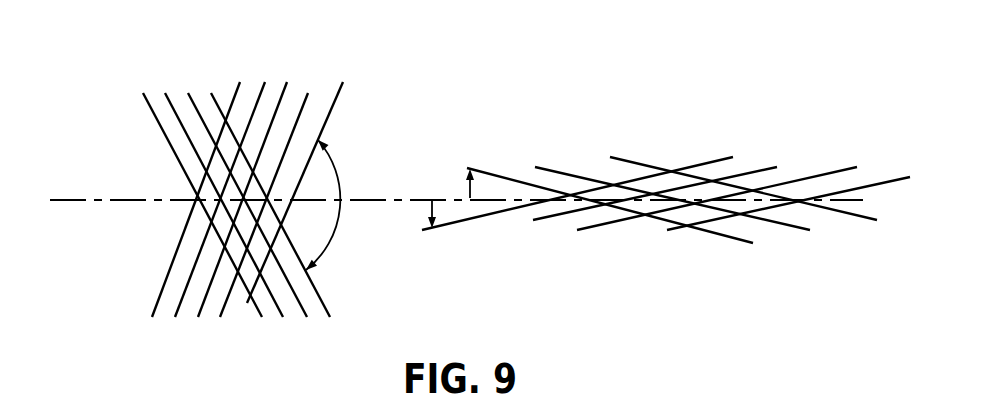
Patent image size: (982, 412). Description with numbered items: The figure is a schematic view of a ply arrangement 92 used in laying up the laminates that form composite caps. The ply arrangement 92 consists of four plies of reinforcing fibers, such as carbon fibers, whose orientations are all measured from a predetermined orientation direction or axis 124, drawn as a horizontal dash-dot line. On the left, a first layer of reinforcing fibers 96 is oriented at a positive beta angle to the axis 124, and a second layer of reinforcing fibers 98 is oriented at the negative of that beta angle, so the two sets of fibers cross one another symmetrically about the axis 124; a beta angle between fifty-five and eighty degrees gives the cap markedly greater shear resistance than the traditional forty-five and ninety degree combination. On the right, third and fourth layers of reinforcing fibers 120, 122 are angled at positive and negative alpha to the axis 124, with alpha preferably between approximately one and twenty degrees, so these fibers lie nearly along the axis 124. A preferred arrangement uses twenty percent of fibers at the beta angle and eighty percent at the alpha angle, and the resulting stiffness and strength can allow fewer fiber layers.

The ply arrangement 92 is at (365, 58).
The first layer of reinforcing fibers 96 is at (149, 107).
The second layer of reinforcing fibers 98 is at (172, 262).
The third layer of reinforcing fibers 120 is at (656, 168).
The fourth layer of reinforcing fibers 122 is at (720, 236).
The orientation axis 124 is at (93, 198).